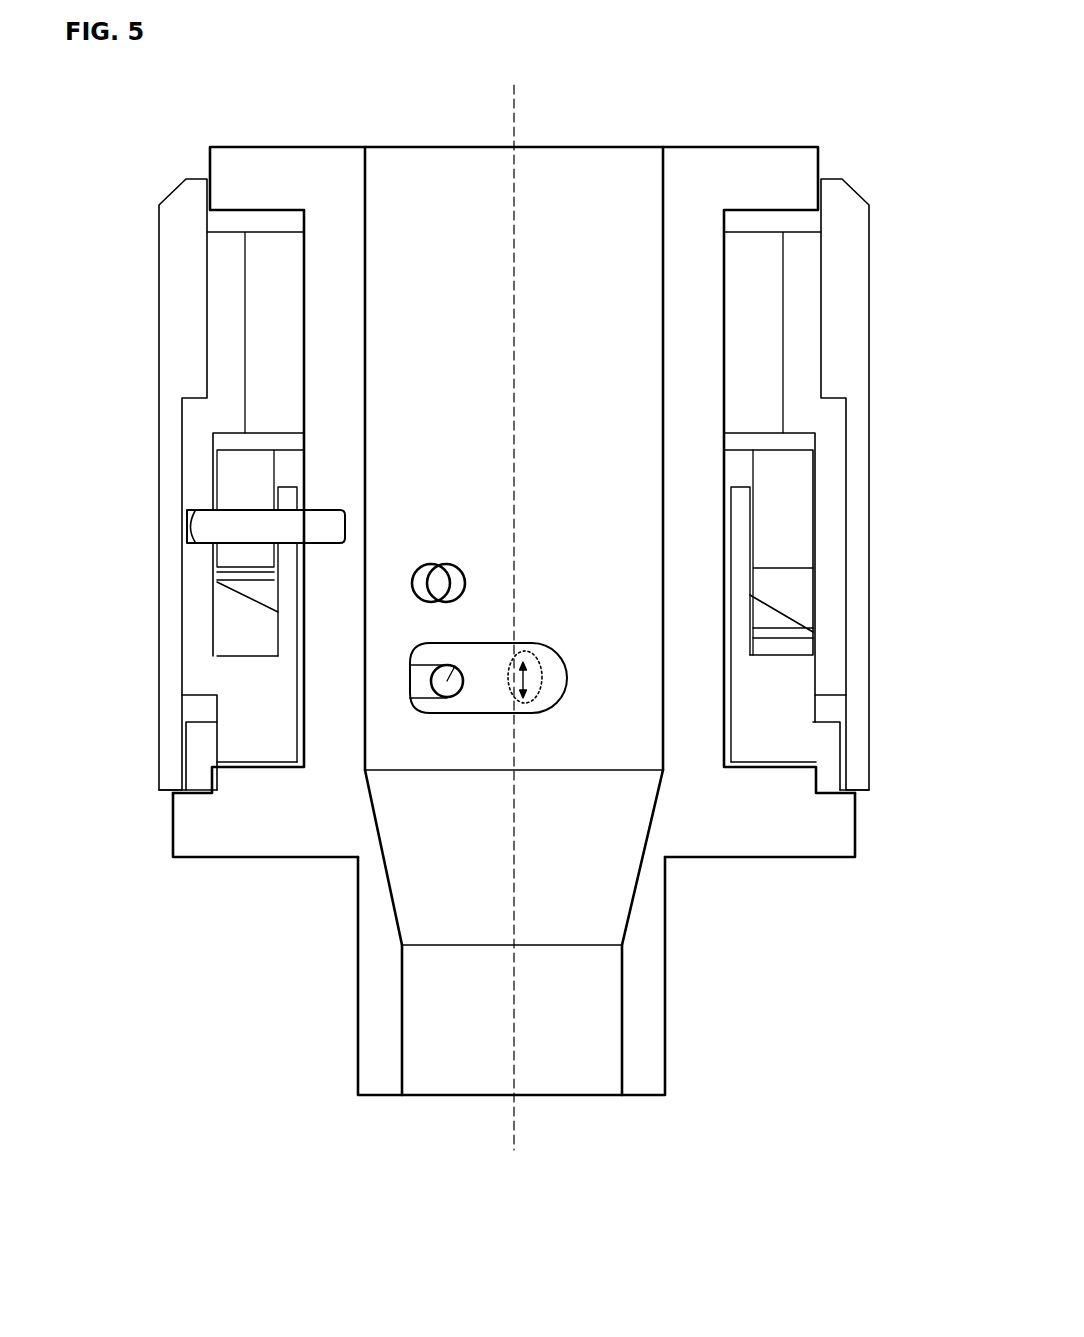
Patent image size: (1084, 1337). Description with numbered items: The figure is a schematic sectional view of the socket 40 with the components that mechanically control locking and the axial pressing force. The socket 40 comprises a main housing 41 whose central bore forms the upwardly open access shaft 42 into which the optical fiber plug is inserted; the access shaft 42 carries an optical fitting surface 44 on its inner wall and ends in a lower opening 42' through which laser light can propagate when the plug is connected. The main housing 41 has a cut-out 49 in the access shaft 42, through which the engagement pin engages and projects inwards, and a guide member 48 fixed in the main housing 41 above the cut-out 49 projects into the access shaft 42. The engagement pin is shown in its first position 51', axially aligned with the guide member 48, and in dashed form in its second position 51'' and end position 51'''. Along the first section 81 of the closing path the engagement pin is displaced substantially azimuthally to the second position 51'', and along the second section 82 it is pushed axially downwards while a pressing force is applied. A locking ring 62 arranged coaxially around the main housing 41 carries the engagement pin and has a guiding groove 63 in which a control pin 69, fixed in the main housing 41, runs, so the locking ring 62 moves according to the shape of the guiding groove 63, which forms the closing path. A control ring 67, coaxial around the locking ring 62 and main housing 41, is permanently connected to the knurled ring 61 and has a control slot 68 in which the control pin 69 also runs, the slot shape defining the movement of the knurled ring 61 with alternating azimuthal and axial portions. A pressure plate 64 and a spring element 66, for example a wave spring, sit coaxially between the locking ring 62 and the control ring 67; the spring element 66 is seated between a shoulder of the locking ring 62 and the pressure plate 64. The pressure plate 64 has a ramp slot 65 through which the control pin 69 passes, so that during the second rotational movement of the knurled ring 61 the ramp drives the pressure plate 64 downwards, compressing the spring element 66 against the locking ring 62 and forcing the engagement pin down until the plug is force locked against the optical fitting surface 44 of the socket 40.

The socket 40 is at (181, 974).
The main housing 41 is at (226, 849).
The access shaft 42 is at (470, 445).
The lower opening 42' is at (447, 994).
The optical fitting surface 44 is at (631, 876).
The guide member 48 is at (452, 580).
The cut-out 49 is at (493, 708).
The first position of the engagement pin 51' is at (543, 582).
The second position of the engagement pin 51'' is at (577, 630).
The end position of the engagement pin 51''' is at (587, 695).
The knurled ring 61 is at (186, 332).
The locking ring 62 is at (198, 752).
The guiding groove 63 is at (290, 502).
The pressure plate 64 is at (238, 482).
The ramp slot 65 is at (241, 505).
The spring element 66 is at (258, 590).
The control ring 67 is at (195, 667).
The control slot 68 is at (199, 549).
The control pin 69 is at (213, 528).
The first section of the closing path 81 is at (490, 680).
The second section of the closing path 82 is at (450, 683).